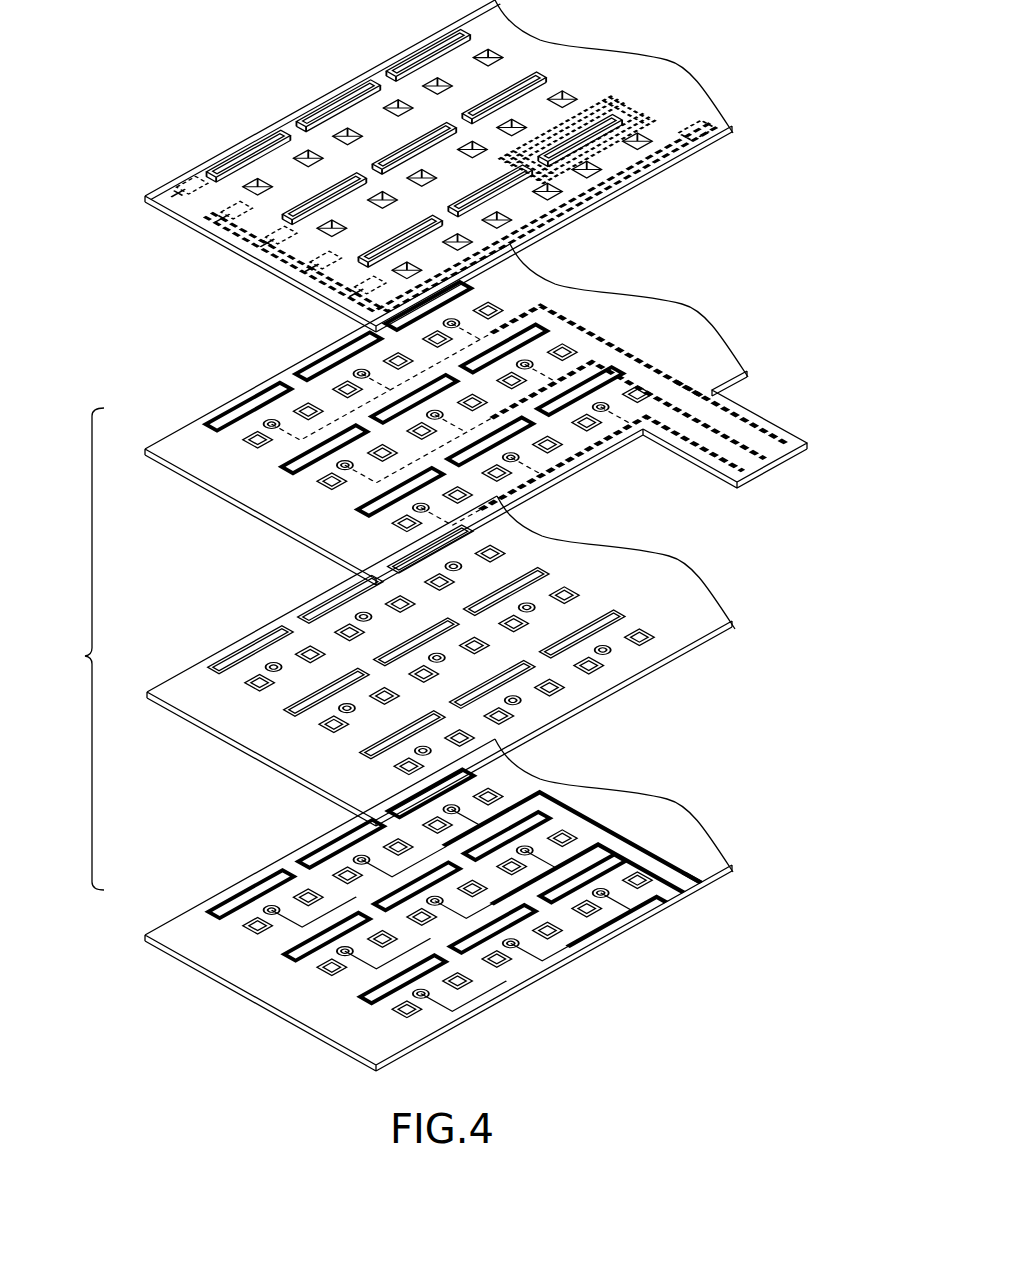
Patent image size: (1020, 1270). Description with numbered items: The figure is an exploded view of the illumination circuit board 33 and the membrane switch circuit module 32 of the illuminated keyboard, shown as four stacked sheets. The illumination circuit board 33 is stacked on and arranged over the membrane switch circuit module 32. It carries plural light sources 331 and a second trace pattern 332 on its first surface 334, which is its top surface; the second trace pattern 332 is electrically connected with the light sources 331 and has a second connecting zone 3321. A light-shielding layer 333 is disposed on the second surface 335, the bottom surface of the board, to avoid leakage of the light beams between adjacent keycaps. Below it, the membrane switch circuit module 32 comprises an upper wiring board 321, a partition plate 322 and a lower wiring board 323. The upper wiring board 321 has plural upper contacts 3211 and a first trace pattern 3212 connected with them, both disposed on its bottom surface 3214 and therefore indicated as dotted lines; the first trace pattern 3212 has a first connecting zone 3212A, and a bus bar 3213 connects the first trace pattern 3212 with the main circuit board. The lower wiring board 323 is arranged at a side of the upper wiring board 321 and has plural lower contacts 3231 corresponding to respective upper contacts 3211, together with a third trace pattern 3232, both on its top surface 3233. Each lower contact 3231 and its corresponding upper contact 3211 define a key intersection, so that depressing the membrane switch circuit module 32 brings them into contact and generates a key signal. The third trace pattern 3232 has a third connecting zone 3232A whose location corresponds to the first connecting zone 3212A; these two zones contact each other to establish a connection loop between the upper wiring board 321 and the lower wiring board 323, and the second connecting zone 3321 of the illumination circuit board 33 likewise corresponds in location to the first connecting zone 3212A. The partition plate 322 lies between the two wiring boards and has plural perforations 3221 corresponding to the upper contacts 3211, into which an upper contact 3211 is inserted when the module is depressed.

The illumination circuit board 33 is at (424, 166).
The light sources 331 is at (195, 180).
The second trace pattern 332 is at (280, 267).
The light-shielding layer 333 is at (387, 80).
The first surface 334 is at (178, 230).
The second surface 335 is at (270, 130).
The second connecting zone 3321 is at (700, 133).
The membrane switch circuit module 32 is at (79, 649).
The upper wiring board 321 is at (470, 414).
The upper contacts 3211 is at (247, 440).
The first trace pattern 3212 is at (620, 447).
The first connecting zone 3212A is at (683, 390).
The bus bar 3213 is at (743, 423).
The bottom surface 3214 is at (227, 497).
The partition plate 322 is at (421, 661).
The perforations 3221 is at (527, 603).
The lower wiring board 323 is at (429, 905).
The lower contacts 3231 is at (248, 930).
The third trace pattern 3232 is at (613, 937).
The third connecting zone 3232A is at (697, 883).
The top surface 3233 is at (290, 867).